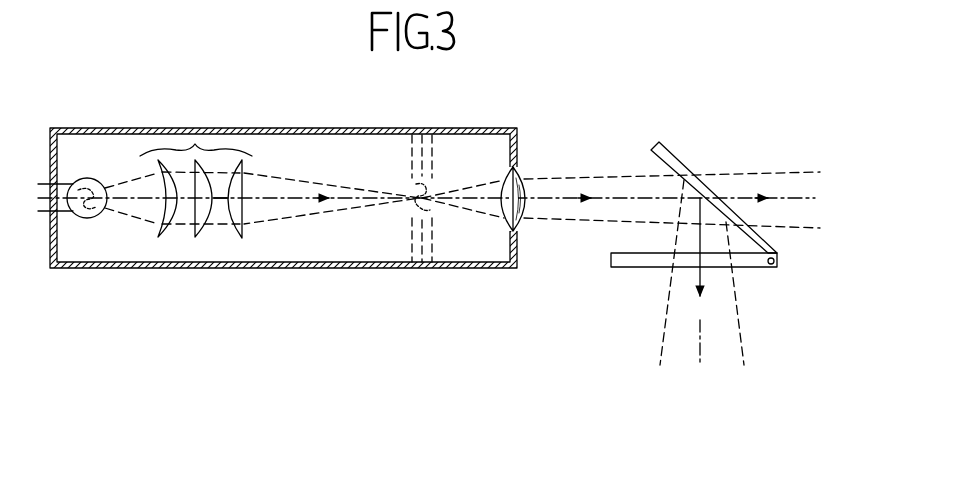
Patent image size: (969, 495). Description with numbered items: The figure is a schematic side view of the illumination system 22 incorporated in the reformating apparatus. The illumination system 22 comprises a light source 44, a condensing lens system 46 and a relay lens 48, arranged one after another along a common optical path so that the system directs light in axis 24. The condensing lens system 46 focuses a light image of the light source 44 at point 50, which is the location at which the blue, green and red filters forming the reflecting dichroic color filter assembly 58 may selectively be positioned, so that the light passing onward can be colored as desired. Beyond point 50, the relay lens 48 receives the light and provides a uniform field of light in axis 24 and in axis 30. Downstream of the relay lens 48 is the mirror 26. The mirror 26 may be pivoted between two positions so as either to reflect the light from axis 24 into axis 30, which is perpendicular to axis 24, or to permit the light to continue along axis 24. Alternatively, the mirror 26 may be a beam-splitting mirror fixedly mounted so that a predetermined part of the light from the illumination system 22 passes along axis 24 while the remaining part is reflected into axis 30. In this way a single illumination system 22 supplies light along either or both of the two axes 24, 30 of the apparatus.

The illumination system 22 is at (400, 129).
The axis 24 is at (787, 198).
The mirror 26 is at (677, 163).
The axis 30 is at (700, 347).
The light source 44 is at (88, 178).
The condensing lens system 46 is at (196, 146).
The relay lens 48 is at (524, 182).
The point 50 is at (418, 203).
The reflecting dichroic color filter assembly 58 is at (421, 172).